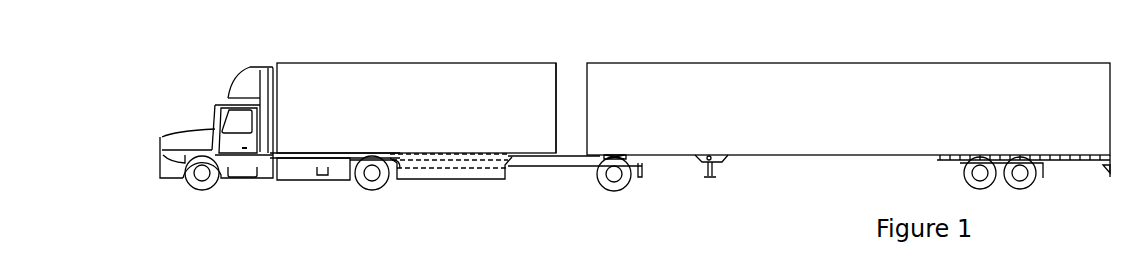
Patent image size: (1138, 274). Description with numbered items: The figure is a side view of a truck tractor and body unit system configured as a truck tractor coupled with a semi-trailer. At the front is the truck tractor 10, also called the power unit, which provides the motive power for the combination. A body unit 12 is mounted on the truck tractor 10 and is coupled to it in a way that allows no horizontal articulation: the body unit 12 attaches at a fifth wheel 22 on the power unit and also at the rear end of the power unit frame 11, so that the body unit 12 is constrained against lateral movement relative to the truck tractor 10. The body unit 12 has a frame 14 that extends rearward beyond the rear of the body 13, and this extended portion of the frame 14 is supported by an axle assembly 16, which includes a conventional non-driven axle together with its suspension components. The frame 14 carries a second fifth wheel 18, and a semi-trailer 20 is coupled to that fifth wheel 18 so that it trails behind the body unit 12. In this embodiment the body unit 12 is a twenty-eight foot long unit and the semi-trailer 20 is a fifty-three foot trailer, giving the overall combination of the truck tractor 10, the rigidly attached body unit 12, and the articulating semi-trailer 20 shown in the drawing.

The truck tractor 10 is at (225, 72).
The power unit frame 11 is at (345, 180).
The body unit 12 is at (417, 63).
The body 13 is at (557, 85).
The frame 14 is at (553, 170).
The axle assembly 16 is at (610, 197).
The fifth wheel 18 is at (609, 156).
The semi-trailer 20 is at (753, 63).
The fifth wheel 22 is at (307, 157).